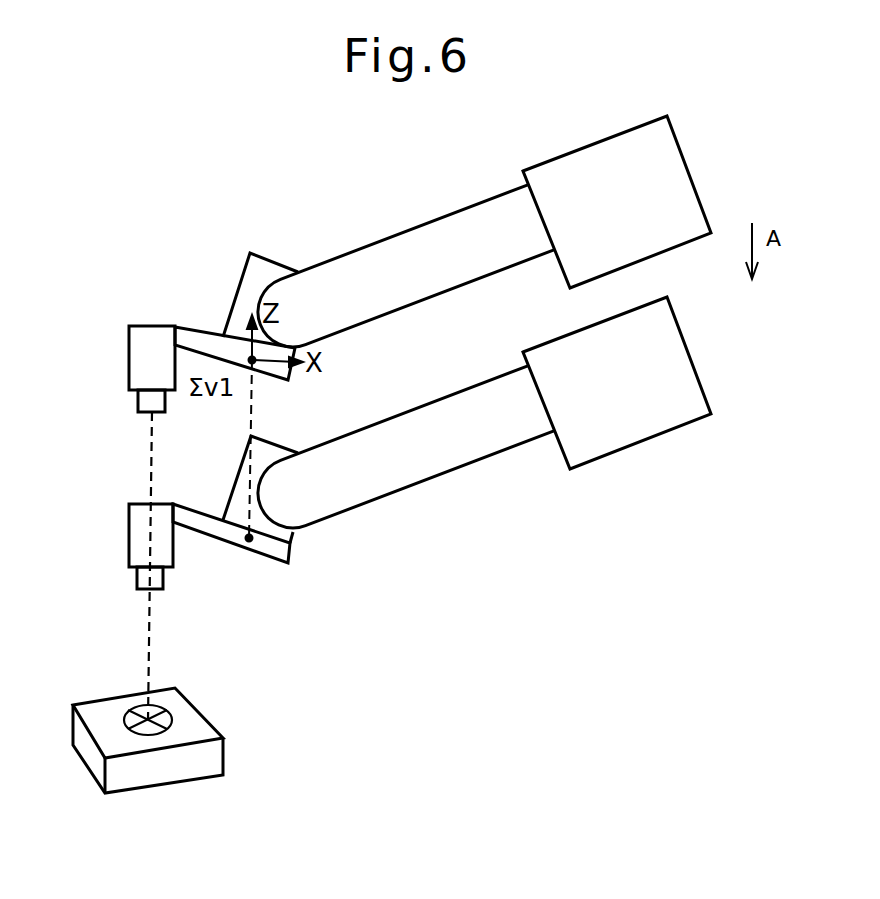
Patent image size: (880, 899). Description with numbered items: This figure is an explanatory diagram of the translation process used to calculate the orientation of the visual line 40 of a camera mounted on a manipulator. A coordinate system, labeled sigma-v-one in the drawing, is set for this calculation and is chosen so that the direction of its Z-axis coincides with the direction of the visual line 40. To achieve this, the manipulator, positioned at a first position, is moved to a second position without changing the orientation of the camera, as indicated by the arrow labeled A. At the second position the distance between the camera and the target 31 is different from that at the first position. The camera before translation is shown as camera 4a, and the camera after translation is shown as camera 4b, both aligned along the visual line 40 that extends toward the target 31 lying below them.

The camera before translation 4a is at (129, 363).
The camera after translation 4b is at (129, 547).
The visual line 40 is at (150, 630).
The target 31 is at (172, 718).